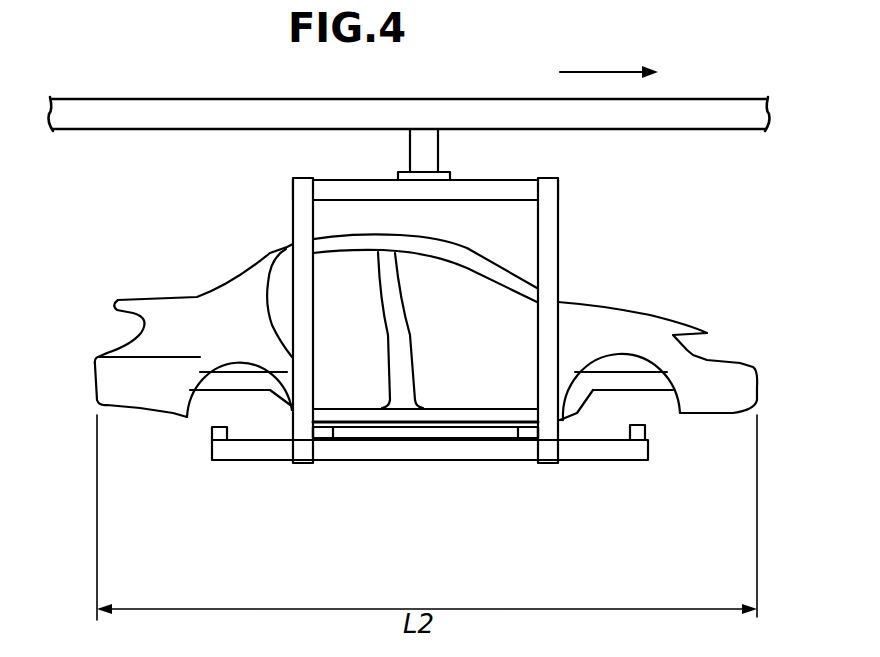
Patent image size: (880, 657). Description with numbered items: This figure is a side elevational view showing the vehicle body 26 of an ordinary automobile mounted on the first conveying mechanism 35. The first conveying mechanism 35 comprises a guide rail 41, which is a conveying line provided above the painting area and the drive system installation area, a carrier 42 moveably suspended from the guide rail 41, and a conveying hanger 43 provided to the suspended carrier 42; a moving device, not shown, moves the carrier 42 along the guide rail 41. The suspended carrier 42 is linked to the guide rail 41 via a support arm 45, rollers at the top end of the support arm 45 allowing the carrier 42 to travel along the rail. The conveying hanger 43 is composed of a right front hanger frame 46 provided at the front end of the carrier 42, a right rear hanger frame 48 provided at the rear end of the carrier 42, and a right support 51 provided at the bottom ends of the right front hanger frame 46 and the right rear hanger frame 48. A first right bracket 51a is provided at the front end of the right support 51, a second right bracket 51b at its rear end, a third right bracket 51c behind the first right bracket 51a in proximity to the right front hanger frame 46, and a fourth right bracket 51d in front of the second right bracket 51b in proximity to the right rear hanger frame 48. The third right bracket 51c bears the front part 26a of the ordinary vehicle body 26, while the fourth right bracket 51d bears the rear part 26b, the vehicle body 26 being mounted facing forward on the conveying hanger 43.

The first conveying mechanism 35 is at (493, 99).
The guide rail 41 is at (222, 107).
The carrier 42 is at (352, 186).
The conveying hanger 43 is at (441, 297).
The support arm 45 is at (423, 132).
The right front hanger frame 46 is at (553, 327).
The right rear hanger frame 48 is at (302, 283).
The vehicle body 26 is at (415, 327).
The front part 26a is at (528, 417).
The rear part 26b is at (320, 407).
The right support 51 is at (424, 493).
The first right bracket 51a is at (635, 432).
The second right bracket 51b is at (212, 430).
The third right bracket 51c is at (520, 432).
The fourth right bracket 51d is at (310, 438).